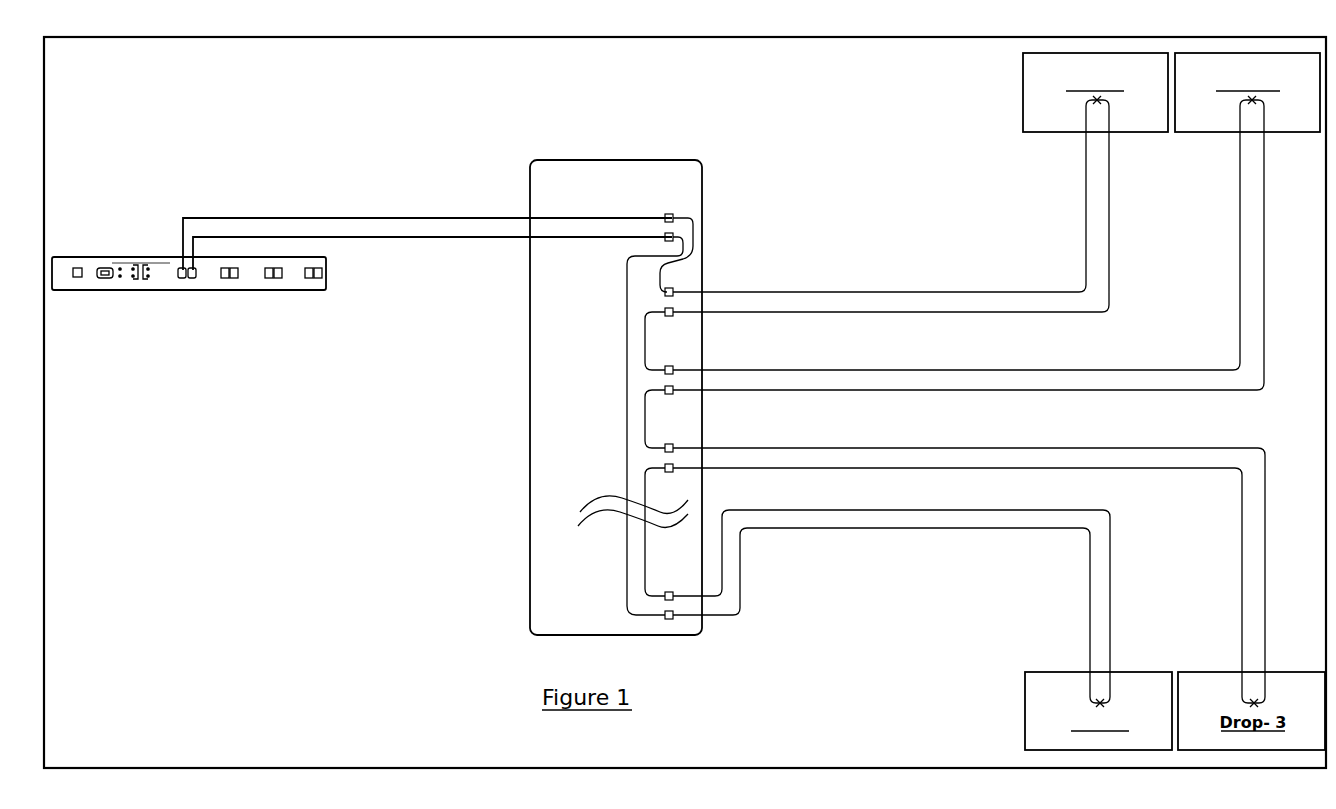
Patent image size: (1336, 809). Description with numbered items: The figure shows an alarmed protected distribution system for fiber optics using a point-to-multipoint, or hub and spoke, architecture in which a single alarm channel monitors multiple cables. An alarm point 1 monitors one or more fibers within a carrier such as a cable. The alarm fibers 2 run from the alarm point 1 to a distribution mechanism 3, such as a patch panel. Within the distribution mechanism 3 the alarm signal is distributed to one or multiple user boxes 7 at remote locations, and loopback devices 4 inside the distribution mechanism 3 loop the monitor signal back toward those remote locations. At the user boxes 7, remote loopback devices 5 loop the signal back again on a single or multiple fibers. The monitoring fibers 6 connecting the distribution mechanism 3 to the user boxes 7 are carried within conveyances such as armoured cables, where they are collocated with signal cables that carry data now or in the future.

The alarm point 1 is at (187, 302).
The alarm fiber 2 is at (225, 200).
The distribution mechanism 3 is at (530, 356).
The loopback device 4 is at (645, 421).
The remote loopback device 5 is at (1073, 107).
The monitoring fiber 6 is at (905, 552).
The user box 7 is at (1210, 145).